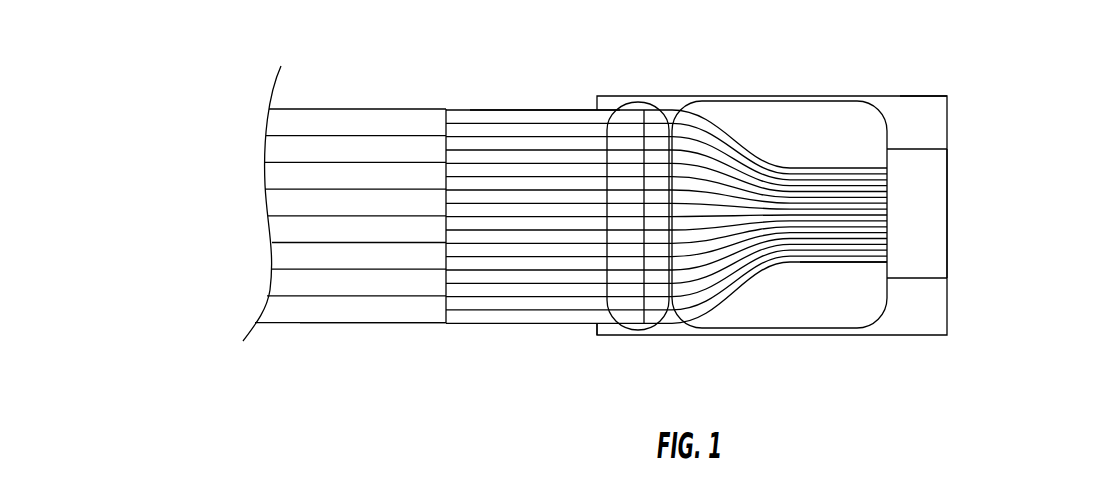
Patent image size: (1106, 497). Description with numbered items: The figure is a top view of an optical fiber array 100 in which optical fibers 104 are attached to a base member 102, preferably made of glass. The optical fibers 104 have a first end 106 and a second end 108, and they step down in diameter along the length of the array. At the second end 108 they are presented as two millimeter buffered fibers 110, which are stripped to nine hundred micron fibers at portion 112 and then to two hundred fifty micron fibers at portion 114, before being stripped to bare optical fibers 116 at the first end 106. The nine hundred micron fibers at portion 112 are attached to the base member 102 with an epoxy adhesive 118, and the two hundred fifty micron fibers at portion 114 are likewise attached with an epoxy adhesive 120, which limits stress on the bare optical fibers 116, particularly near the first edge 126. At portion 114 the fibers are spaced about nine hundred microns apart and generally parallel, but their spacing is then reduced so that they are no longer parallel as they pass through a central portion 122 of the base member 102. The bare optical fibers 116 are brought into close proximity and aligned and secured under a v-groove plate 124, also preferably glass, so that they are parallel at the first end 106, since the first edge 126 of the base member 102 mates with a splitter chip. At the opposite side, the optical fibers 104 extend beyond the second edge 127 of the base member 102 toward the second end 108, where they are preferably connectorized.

The optical fiber array 100 is at (477, 342).
The base member 102 is at (940, 336).
The optical fibers 104 is at (498, 106).
The first end 106 is at (988, 190).
The second end 108 is at (303, 108).
The buffered fibers 110 is at (411, 108).
The portion 112 is at (551, 86).
The portion 114 is at (732, 140).
The bare optical fibers 116 is at (858, 270).
The epoxy adhesive 118 is at (653, 109).
The epoxy adhesive 120 is at (867, 107).
The central portion 122 is at (847, 343).
The v-groove plate 124 is at (947, 148).
The first edge 126 is at (948, 245).
The second edge 127 is at (597, 332).